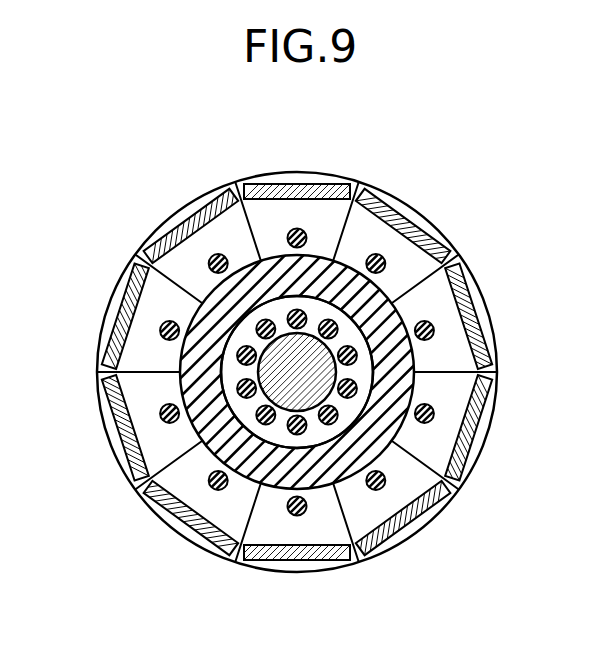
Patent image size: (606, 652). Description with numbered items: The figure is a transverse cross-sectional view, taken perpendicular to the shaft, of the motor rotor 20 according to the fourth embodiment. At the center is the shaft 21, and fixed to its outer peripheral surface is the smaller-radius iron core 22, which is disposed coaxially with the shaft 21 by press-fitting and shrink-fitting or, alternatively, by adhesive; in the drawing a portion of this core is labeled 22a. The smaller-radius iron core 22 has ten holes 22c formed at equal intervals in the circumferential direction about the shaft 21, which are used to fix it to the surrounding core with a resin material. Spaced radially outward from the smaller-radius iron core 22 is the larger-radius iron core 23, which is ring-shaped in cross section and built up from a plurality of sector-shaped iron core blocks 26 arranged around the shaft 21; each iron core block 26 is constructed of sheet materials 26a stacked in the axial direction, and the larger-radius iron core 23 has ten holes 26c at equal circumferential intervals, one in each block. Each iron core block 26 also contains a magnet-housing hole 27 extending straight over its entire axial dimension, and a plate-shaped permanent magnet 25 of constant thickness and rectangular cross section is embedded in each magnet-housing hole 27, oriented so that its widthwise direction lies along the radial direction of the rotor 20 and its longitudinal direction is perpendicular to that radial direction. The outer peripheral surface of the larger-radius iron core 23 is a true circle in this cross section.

The rotor 20 is at (380, 162).
The shaft 21 is at (296, 368).
The smaller-radius iron core 22 is at (266, 292).
The hub portion of rotor core 22a is at (233, 376).
The holes 22c is at (244, 392).
The larger-radius iron core 23 is at (497, 390).
The permanent magnet 25 is at (293, 562).
The iron core block 26 is at (488, 345).
The sheet materials 26a is at (483, 325).
The holes 26c is at (428, 330).
The magnet-housing hole 27 is at (456, 286).